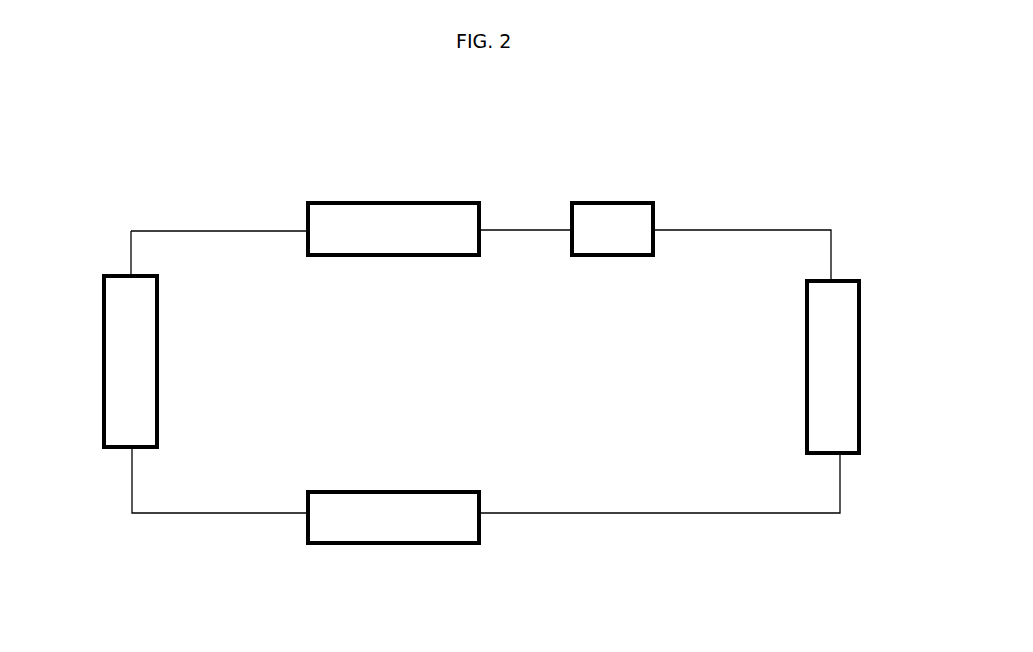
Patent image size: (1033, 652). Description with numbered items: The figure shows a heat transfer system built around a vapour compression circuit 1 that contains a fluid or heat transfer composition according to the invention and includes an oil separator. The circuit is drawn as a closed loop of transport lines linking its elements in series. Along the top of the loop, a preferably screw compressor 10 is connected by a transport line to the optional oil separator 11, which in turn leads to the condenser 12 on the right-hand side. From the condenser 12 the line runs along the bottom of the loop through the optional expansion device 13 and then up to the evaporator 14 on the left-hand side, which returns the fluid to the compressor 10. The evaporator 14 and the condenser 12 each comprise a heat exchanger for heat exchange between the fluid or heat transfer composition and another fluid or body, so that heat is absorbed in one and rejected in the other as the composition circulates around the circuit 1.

The vapour compression circuit 1 is at (820, 202).
The compressor 10 is at (385, 200).
The oil separator 11 is at (615, 198).
The condenser 12 is at (862, 337).
The expansion device 13 is at (397, 548).
The evaporator 14 is at (99, 353).